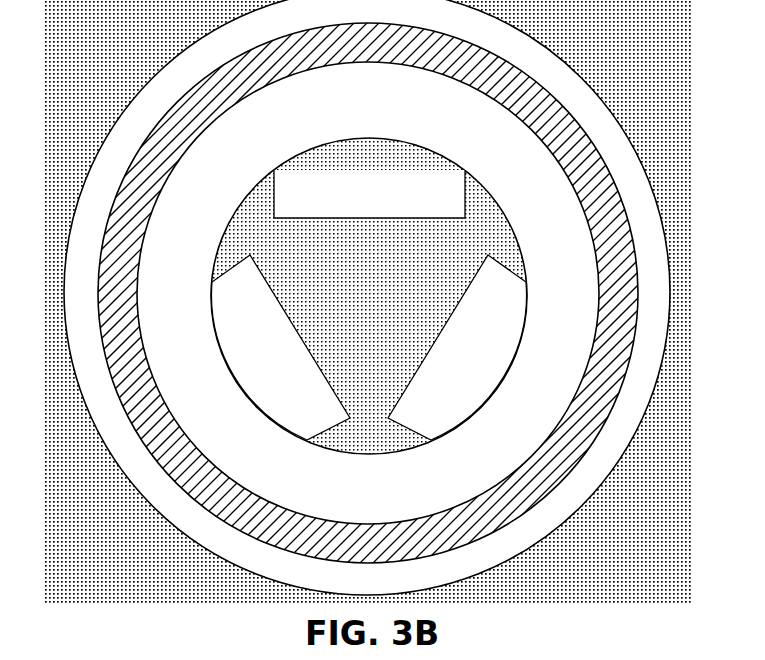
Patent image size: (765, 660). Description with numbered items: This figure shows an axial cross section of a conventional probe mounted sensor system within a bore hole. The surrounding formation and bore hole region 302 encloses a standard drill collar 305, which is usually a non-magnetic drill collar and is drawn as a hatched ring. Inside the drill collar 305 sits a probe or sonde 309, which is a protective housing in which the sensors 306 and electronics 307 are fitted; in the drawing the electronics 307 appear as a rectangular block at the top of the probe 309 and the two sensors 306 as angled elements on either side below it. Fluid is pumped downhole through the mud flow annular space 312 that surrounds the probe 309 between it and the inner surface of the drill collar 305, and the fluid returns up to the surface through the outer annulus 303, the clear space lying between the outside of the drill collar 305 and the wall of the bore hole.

The substrate 302 is at (682, 24).
The outer annulus 303 is at (595, 128).
The standard drill collar 305 is at (640, 258).
The mud flow annular space 312 is at (168, 265).
The electronics 307 is at (369, 194).
The sensors 306 is at (368, 347).
The probe or sonde 309 is at (360, 445).